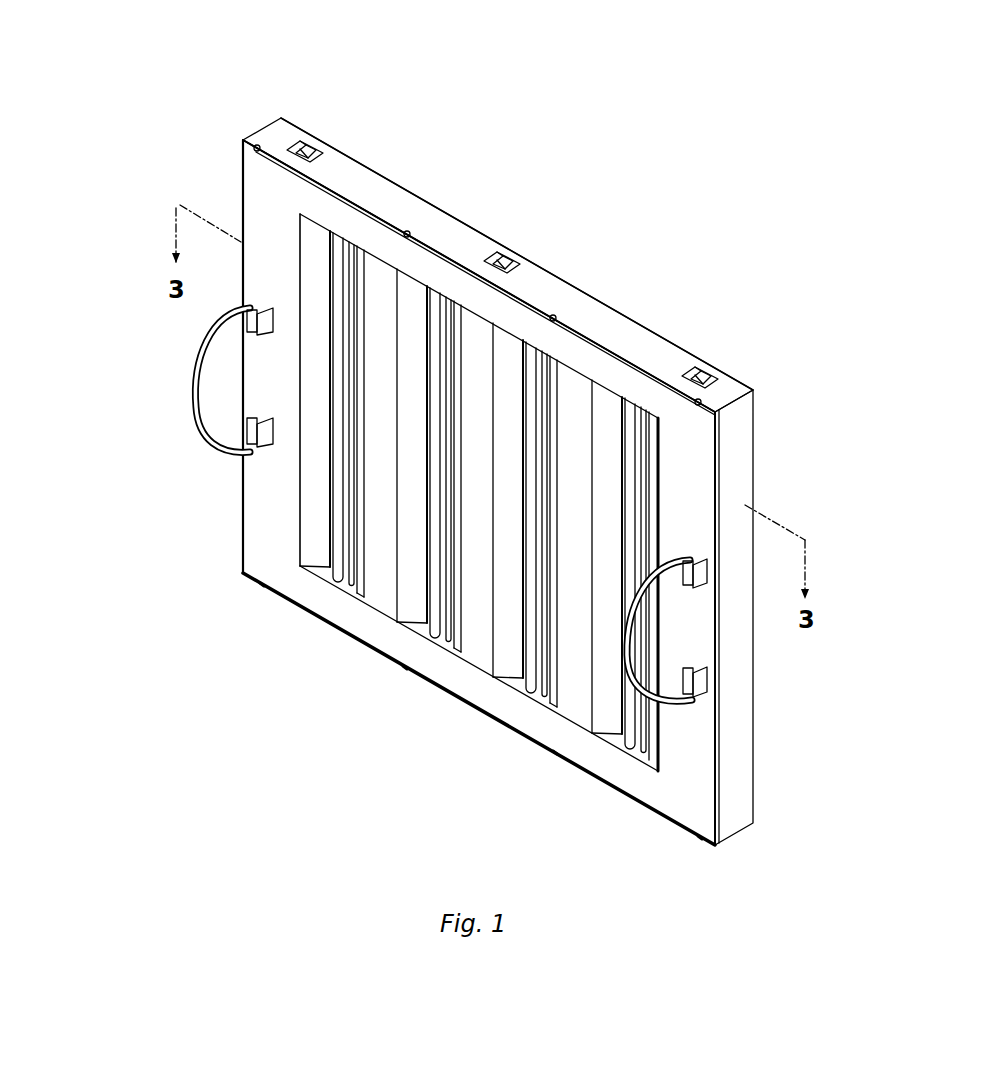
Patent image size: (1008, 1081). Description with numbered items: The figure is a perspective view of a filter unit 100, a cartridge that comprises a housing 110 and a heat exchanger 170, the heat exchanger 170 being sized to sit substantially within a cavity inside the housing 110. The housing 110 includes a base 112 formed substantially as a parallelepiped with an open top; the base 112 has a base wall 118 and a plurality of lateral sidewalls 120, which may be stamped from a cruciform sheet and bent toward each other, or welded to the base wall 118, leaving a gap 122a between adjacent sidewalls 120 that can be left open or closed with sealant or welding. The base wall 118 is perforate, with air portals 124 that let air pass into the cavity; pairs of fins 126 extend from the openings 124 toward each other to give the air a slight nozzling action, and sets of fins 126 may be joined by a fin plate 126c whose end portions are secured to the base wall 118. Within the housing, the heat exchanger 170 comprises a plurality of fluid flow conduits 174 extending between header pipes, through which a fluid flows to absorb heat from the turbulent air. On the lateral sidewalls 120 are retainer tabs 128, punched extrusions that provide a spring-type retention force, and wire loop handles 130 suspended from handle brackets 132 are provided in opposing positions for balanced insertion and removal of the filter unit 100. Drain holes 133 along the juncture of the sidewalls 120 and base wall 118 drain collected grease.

The filter unit 100 is at (505, 106).
The housing 110 is at (240, 539).
The base 112 is at (258, 205).
The base wall 118 is at (258, 495).
The lateral sidewalls 120 is at (620, 330).
The gap 122a is at (755, 392).
The air portals 124 is at (333, 572).
The fins 126 is at (310, 291).
The fin plate 126c is at (562, 456).
The retainer tabs 128 is at (305, 148).
The handles 130 is at (240, 448).
The handle brackets 132 is at (247, 322).
The drain holes 133 is at (257, 144).
The heat exchanger 170 is at (340, 246).
The fluid flow conduits 174 is at (530, 348).